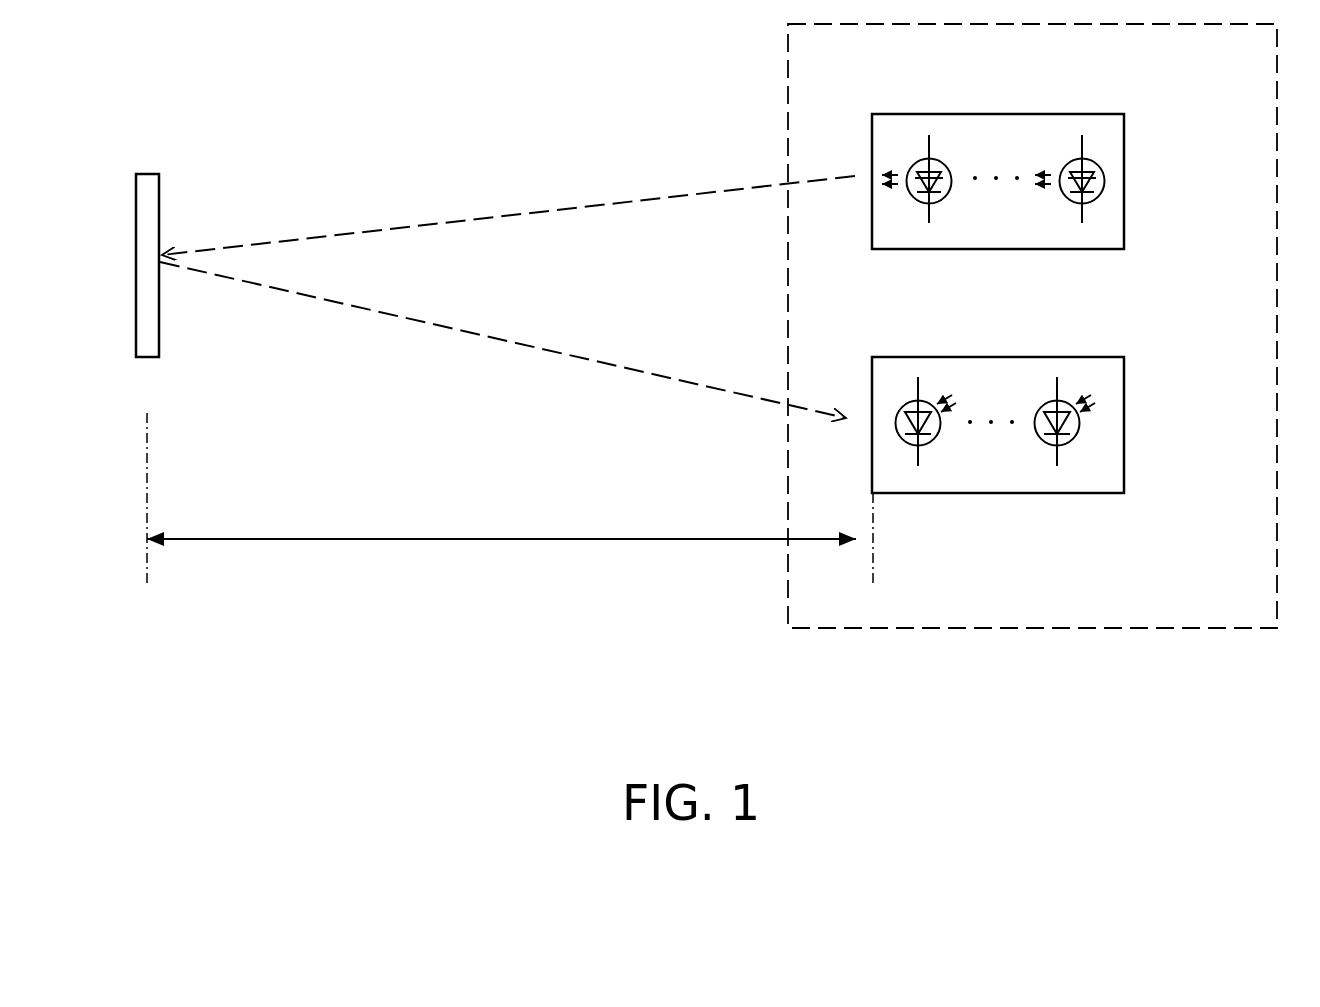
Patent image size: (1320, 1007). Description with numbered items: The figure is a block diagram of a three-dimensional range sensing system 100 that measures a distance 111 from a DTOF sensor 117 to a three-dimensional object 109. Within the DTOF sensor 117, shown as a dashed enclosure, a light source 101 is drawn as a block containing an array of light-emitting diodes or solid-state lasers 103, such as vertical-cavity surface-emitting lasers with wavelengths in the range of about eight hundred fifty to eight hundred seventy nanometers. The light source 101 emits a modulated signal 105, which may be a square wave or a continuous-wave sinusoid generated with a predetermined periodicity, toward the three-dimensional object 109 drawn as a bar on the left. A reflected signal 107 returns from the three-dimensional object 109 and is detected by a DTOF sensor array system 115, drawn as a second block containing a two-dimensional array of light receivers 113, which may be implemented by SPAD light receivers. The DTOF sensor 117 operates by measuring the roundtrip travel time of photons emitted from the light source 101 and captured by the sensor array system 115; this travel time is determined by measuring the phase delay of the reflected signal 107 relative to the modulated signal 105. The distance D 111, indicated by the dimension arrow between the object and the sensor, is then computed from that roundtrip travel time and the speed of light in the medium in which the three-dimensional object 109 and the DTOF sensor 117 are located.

The 3-D range sensing system 100 is at (1051, 369).
The light source 101 is at (1032, 156).
The light-emitting diodes or solid-state lasers 103 is at (1112, 183).
The modulated signal 105 is at (517, 217).
The reflected signal 107 is at (472, 337).
The 3D object 109 is at (148, 174).
The distance D 111 is at (595, 539).
The light receivers 113 is at (1032, 400).
The DTOF sensor array system 115 is at (1113, 426).
The DTOF sensor 117 is at (1013, 630).